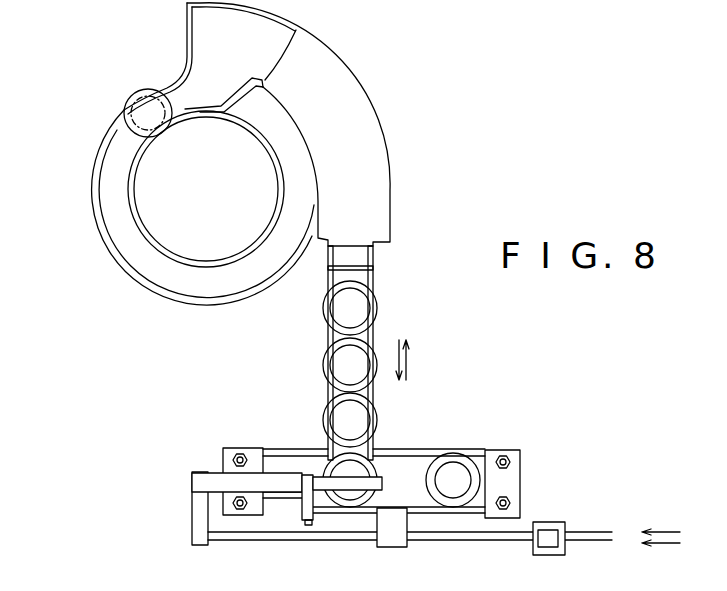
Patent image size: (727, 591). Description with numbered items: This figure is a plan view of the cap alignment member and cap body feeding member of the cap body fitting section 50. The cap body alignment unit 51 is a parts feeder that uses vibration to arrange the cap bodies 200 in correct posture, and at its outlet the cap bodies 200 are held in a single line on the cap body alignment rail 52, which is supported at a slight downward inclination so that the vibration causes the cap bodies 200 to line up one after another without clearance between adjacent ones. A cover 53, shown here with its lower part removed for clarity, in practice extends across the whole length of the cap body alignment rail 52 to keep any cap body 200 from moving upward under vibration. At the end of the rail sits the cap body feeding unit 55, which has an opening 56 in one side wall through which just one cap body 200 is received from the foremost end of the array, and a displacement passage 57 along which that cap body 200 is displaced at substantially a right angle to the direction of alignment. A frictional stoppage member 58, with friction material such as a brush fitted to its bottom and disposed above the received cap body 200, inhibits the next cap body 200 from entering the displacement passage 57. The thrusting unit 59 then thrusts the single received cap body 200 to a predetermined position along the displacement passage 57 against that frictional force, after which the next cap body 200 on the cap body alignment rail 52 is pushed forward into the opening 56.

The cap body fitting section 50 is at (262, 154).
The cap body alignment unit 51 is at (76, 210).
The cap body alignment rail 52 is at (373, 376).
The cover 53 is at (386, 217).
The cap body feeding unit 55 is at (426, 485).
The opening 56 is at (328, 455).
The displacement passage 57 is at (422, 497).
The frictional stoppage member 58 is at (350, 485).
The thrusting unit 59 is at (200, 475).
The cap body 200 is at (355, 312).